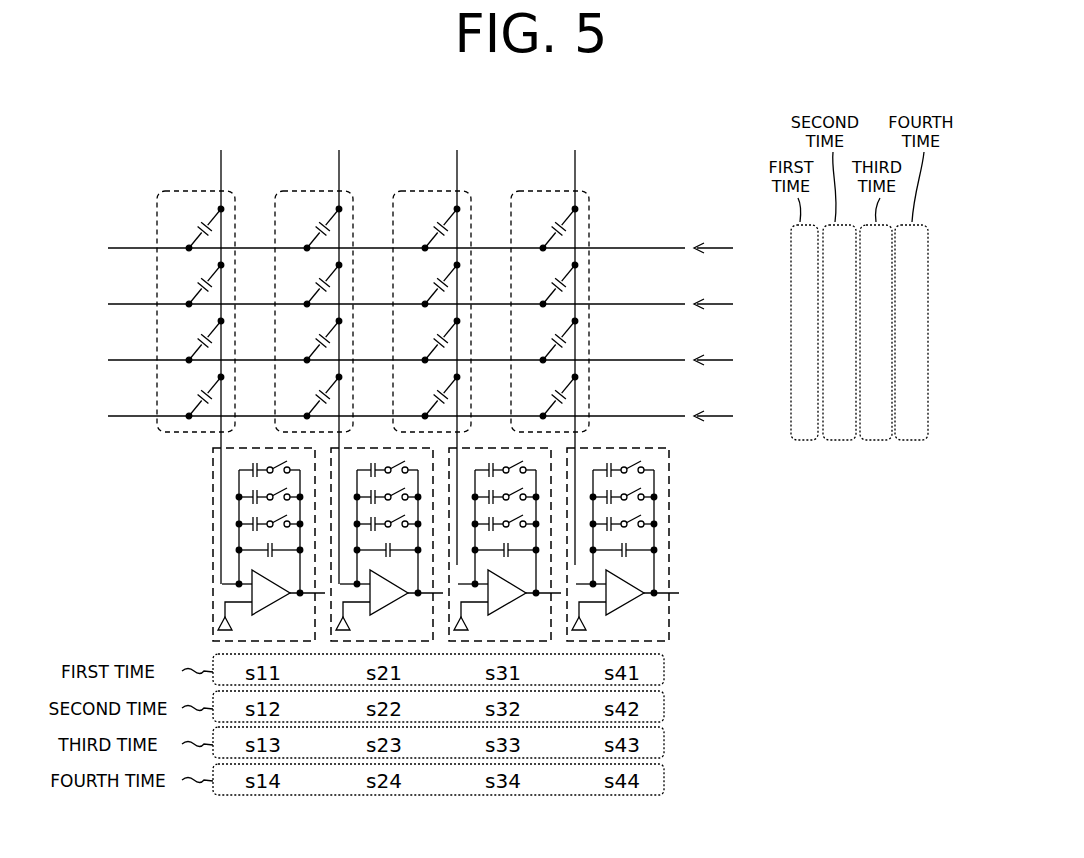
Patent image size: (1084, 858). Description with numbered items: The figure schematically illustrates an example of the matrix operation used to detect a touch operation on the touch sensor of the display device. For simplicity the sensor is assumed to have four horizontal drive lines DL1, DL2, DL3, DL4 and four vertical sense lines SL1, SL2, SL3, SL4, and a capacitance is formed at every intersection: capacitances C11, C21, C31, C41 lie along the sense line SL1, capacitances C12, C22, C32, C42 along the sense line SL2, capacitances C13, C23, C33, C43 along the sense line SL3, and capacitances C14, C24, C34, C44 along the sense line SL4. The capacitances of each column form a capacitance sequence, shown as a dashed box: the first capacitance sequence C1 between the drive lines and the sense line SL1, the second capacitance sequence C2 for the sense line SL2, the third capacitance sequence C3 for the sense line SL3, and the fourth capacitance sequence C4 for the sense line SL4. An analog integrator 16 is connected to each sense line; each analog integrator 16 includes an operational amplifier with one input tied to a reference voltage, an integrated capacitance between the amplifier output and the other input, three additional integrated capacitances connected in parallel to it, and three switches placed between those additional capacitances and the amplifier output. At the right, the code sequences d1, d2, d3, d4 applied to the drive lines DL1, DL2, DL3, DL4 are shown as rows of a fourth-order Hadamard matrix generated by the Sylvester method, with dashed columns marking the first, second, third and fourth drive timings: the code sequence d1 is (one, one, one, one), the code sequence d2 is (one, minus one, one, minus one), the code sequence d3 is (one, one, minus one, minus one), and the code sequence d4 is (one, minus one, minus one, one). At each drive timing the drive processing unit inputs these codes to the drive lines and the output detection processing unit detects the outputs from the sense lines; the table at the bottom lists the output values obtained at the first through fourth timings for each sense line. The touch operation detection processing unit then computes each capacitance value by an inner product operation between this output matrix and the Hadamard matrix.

The analog integrator 16 is at (213, 528).
The sense line SL1 is at (222, 157).
The sense line SL2 is at (340, 157).
The sense line SL3 is at (458, 157).
The sense line SL4 is at (576, 157).
The drive line DL1 is at (119, 246).
The drive line DL2 is at (119, 302).
The drive line DL3 is at (119, 358).
The drive line DL4 is at (119, 414).
The first capacitance sequence C1 is at (181, 188).
The second capacitance sequence C2 is at (299, 188).
The third capacitance sequence C3 is at (417, 188).
The fourth capacitance sequence C4 is at (535, 188).
The capacitance C11 is at (195, 227).
The capacitance C12 is at (313, 227).
The capacitance C13 is at (431, 227).
The capacitance C14 is at (549, 227).
The capacitance C21 is at (195, 283).
The capacitance C22 is at (313, 283).
The capacitance C23 is at (431, 283).
The capacitance C24 is at (549, 283).
The capacitance C31 is at (195, 339).
The capacitance C32 is at (313, 339).
The capacitance C33 is at (431, 339).
The capacitance C34 is at (549, 339).
The capacitance C41 is at (195, 395).
The capacitance C42 is at (313, 395).
The capacitance C43 is at (431, 395).
The capacitance C44 is at (549, 395).
The code sequence d1 is at (816, 248).
The code sequence d2 is at (816, 304).
The code sequence d3 is at (816, 360).
The code sequence d4 is at (816, 416).